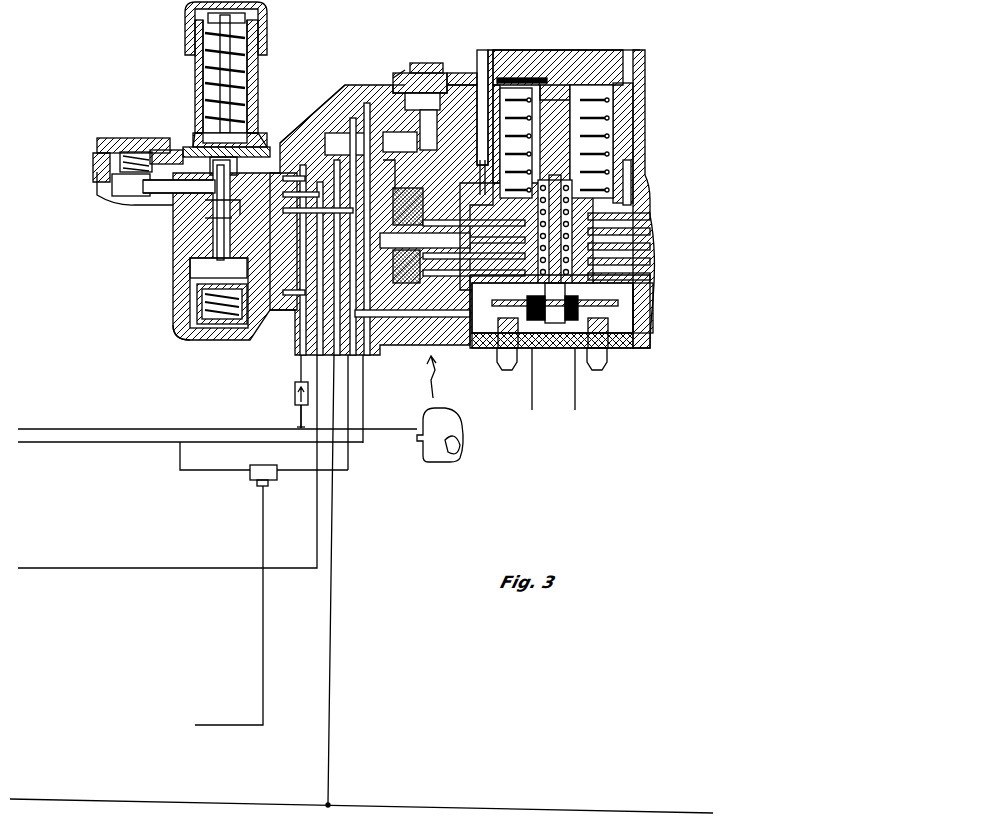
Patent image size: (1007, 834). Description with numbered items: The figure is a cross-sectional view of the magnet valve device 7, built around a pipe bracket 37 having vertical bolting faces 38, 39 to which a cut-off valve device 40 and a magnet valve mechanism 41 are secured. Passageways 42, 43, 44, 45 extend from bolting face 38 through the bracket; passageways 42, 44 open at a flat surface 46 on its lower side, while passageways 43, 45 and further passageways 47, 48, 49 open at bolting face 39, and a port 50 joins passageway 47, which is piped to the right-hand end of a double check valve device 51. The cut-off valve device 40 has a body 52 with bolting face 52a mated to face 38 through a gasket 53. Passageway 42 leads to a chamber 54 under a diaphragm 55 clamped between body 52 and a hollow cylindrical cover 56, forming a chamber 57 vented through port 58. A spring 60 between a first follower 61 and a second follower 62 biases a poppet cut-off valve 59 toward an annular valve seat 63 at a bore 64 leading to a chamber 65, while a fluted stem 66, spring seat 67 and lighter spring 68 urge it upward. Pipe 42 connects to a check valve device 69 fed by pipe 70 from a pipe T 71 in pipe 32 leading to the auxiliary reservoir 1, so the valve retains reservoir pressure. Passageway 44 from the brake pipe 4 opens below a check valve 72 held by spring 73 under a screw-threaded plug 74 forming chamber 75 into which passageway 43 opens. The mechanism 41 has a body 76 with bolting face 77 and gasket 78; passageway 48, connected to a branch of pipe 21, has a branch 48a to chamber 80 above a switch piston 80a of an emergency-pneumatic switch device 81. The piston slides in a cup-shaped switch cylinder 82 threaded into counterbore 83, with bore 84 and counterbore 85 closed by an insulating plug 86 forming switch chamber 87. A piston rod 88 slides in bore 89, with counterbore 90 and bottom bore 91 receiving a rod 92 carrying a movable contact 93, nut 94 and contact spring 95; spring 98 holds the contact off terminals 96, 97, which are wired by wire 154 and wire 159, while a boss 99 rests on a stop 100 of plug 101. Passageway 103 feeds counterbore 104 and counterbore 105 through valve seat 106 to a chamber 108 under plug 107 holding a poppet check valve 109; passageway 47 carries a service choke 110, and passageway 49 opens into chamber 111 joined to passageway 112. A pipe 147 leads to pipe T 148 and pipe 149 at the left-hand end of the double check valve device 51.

The auxiliary reservoir 1 is at (454, 476).
The brake pipe 4 is at (42, 800).
The magnet valve device 7 is at (314, 107).
The pipe 21 is at (50, 568).
The pipe 32 is at (50, 429).
The pipe bracket 37 is at (332, 97).
The vertical bolting face 38 is at (285, 211).
The vertical bolting face 39 is at (395, 290).
The cut-off valve device 40 is at (99, 207).
The magnet valve mechanism 41 is at (436, 381).
The passageway 42 is at (303, 165).
The passageway 43 is at (150, 184).
The passageway 44 is at (150, 196).
The passageway 45 is at (285, 241).
The flat surface 46 is at (319, 357).
The passageway 47 is at (340, 102).
The passageway 48 is at (353, 118).
The branch 48a is at (492, 70).
The passageway 49 is at (370, 358).
The port 50 is at (380, 313).
The double check valve device 51 is at (246, 488).
The body 52 is at (190, 271).
The vertical bolting face 52a is at (297, 312).
The gasket 53 is at (285, 226).
The chamber 54 is at (195, 165).
The diaphragm 55 is at (192, 140).
The hollow cylindrical cover 56 is at (196, 64).
The chamber 57 is at (200, 108).
The port 58 is at (258, 84).
The cut-off valve 59 is at (205, 160).
The spring 60 is at (215, 32).
The first follower 61 is at (198, 125).
The second follower 62 is at (208, 33).
The annular valve seat 63 is at (205, 203).
The bore 64 is at (205, 222).
The chamber 65 is at (197, 286).
The fluted stem 66 is at (217, 250).
The spring seat 67 is at (202, 301).
The spring 68 is at (190, 338).
The check valve device 69 is at (284, 399).
The pipe 70 is at (299, 418).
The pipe T 71 is at (298, 428).
The check valve 72 is at (120, 176).
The spring 73 is at (93, 161).
The screw-threaded plug 74 is at (97, 146).
The chamber 75 is at (112, 182).
The body 76 is at (640, 345).
The vertical bolting face 77 is at (385, 178).
The gasket 78 is at (380, 122).
The chamber 80 is at (635, 76).
The switch piston 80a is at (597, 96).
The emergency-pneumatic switch device 81 is at (651, 54).
The cup-shaped switch cylinder 82 is at (480, 67).
The counterbore 83 is at (630, 207).
The bore 84 is at (578, 300).
The counterbore 85 is at (640, 300).
The screw-threaded plug 86 is at (500, 345).
The switch chamber 87 is at (635, 325).
The piston rod 88 is at (600, 130).
The bore 89 is at (615, 165).
The counterbore 90 is at (518, 290).
The bottom bore 91 is at (610, 145).
The rod 92 is at (620, 180).
The movable contact 93 is at (620, 310).
The nut 94 is at (553, 348).
The contact spring 95 is at (631, 190).
The switch terminal 96 is at (499, 362).
The switch terminal 97 is at (607, 350).
The spring 98 is at (590, 112).
The boss 99 is at (560, 62).
The stop 100 is at (590, 65).
The screw-threaded plug 101 is at (540, 50).
The passageway 103 is at (640, 222).
The counterbore 104 is at (400, 142).
The counterbore 105 is at (470, 62).
The annular valve seat 106 is at (400, 82).
The screw-threaded plug 107 is at (402, 75).
The chamber 108 is at (442, 73).
The check valve 109 is at (432, 60).
The service choke 110 is at (345, 143).
The chamber 111 is at (397, 194).
The passageway 112 is at (640, 238).
The pipe 147 is at (60, 444).
The pipe T 148 is at (180, 445).
The pipe 149 is at (194, 473).
The wire 154 is at (530, 394).
The wire 159 is at (577, 394).